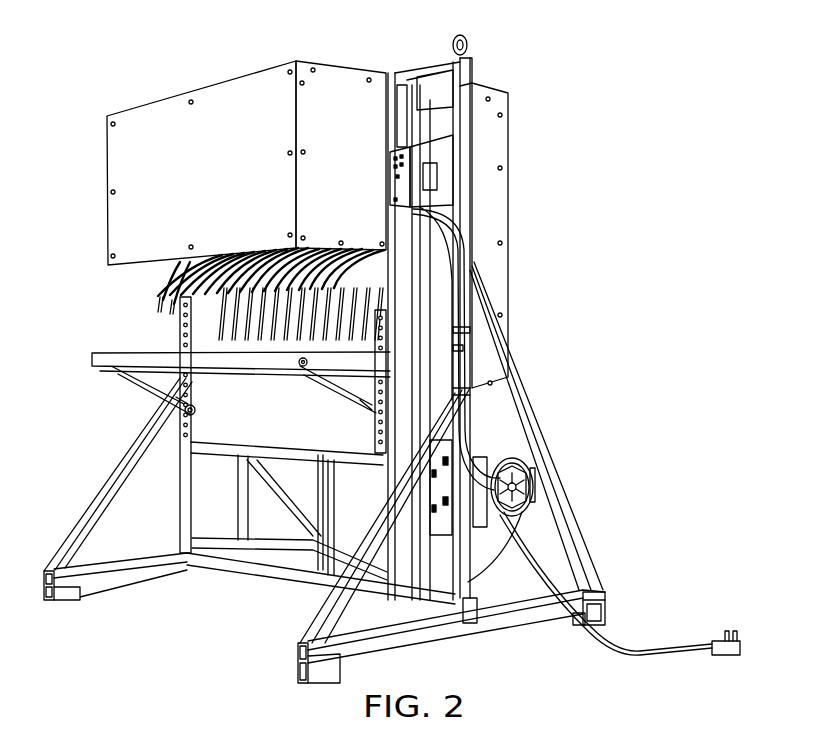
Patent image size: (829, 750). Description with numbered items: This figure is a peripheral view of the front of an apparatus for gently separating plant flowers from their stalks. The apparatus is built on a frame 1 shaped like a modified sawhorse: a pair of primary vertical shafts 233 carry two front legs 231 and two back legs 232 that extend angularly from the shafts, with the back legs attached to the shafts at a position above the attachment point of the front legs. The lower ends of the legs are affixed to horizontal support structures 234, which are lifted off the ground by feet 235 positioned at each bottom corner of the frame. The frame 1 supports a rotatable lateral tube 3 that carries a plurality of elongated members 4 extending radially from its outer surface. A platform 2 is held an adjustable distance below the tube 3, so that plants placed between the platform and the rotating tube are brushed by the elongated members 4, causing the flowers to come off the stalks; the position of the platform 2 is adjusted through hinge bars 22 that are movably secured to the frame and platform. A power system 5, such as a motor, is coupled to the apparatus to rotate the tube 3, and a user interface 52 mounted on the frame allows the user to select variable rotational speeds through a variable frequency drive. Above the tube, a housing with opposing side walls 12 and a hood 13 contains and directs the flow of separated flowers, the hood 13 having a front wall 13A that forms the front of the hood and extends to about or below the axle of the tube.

The frame 1 is at (410, 82).
The platform 2 is at (93, 357).
The lateral tube 3 is at (200, 297).
The elongated members 4 is at (152, 294).
The power system 5 is at (520, 480).
The side walls 12 is at (342, 95).
The hood 13 is at (201, 132).
The front wall 13A is at (178, 130).
The hinge bars 22 is at (148, 385).
The user interface 52 is at (430, 158).
The front legs 231 is at (302, 650).
The back legs 232 is at (565, 507).
The primary vertical shafts 233 is at (182, 525).
The horizontal support structures 234 is at (122, 568).
The feet 235 is at (600, 613).